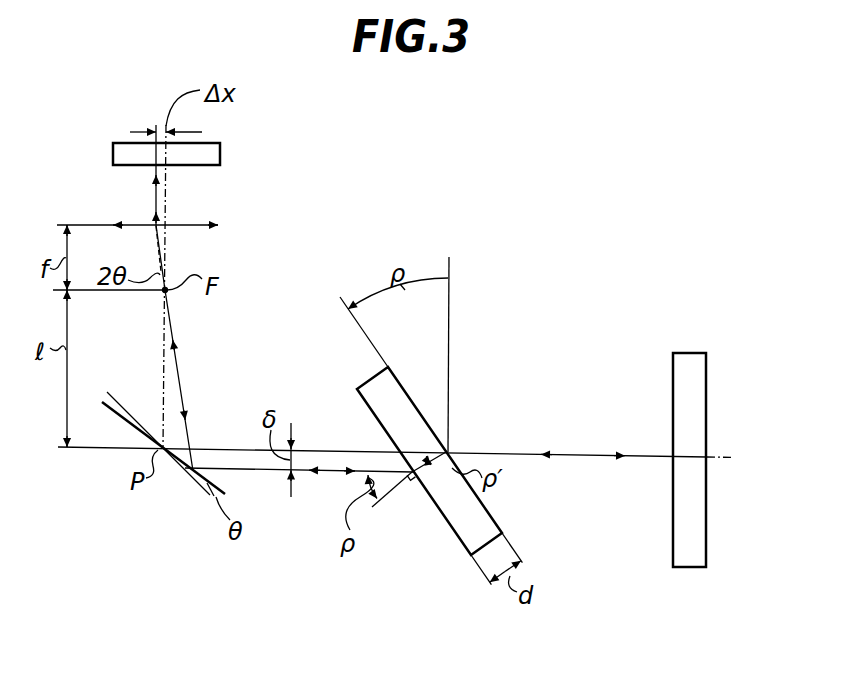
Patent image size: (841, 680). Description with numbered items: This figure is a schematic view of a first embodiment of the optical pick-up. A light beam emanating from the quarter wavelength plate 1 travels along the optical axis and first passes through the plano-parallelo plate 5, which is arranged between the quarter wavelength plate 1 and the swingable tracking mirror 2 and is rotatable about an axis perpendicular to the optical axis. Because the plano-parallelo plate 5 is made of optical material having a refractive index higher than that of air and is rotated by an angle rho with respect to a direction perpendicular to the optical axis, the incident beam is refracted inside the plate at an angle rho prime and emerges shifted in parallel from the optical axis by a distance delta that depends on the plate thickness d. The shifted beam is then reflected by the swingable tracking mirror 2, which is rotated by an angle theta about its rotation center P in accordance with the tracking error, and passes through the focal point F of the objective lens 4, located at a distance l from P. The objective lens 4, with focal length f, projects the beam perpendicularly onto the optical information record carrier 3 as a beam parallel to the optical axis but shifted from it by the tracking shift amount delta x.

The quarter wavelength plate 1 is at (689, 362).
The swingable tracking mirror 2 is at (203, 489).
The optical information record carrier 3 is at (212, 156).
The objective lens 4 is at (190, 226).
The plano-parallelo plate 5 is at (455, 538).